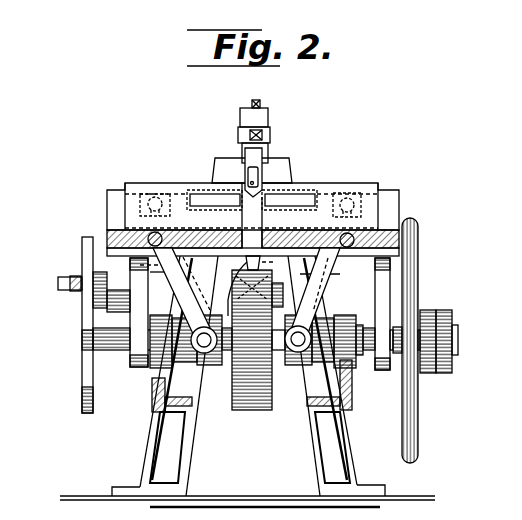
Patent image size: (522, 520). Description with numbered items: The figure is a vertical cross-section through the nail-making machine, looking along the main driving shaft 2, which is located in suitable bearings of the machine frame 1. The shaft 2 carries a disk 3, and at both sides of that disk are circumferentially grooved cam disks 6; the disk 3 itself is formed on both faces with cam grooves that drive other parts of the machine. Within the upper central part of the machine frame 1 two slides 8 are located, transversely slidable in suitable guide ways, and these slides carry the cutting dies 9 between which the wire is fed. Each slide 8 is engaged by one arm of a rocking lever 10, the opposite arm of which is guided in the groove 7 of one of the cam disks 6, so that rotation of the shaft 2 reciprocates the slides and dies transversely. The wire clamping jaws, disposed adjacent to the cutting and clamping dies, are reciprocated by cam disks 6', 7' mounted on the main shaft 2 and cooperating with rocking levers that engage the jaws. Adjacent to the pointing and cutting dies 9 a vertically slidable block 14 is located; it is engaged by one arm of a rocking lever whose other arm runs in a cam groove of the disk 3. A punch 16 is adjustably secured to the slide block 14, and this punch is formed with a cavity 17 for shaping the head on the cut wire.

The machine frame 1 is at (391, 202).
The main driving shaft 2 is at (364, 355).
The disk 3 is at (248, 408).
The cam disk 6 is at (254, 354).
The cam disk 6' is at (251, 356).
The groove 7 is at (246, 334).
The cam disk 7' is at (260, 287).
The slide 8 is at (165, 187).
The cutting die 9 is at (243, 198).
The rocking lever 10 is at (170, 272).
The vertically slidable block 14 is at (266, 148).
The punch 16 is at (258, 173).
The cavity 17 is at (250, 185).